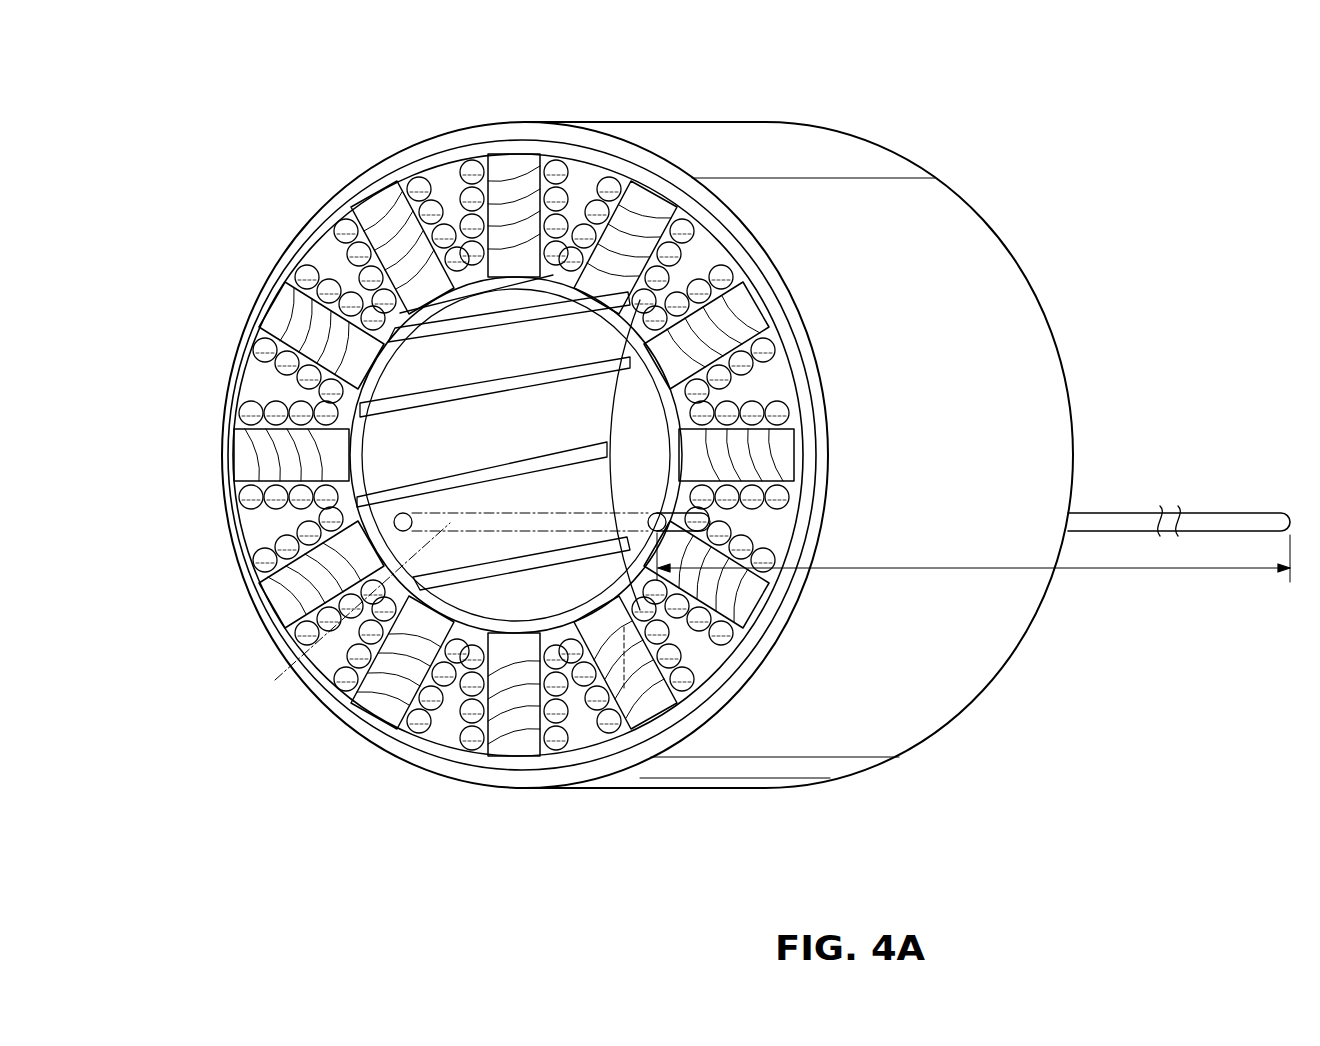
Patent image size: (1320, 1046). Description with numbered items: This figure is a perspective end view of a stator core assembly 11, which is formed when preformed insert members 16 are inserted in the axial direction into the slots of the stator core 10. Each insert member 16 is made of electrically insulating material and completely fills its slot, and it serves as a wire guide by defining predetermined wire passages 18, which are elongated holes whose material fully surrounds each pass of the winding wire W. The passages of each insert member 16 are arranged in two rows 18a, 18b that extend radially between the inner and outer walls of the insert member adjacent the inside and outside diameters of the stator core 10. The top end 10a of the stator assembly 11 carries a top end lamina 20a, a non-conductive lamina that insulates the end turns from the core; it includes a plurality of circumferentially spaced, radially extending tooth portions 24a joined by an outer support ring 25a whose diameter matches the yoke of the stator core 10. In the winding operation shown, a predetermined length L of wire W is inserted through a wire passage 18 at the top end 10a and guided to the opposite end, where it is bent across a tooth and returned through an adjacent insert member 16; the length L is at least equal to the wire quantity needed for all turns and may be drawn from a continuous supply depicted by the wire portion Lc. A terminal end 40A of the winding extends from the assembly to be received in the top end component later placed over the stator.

The stator core 10 is at (672, 793).
The top end 10a is at (226, 504).
The stator core assembly 11 is at (256, 291).
The insert member 16 is at (268, 385).
The wire passage 18 is at (600, 722).
The row of passages 18a is at (410, 178).
The row of passages 18b is at (478, 172).
The top end lamina 20a is at (229, 437).
The tooth portion 24a is at (268, 598).
The outer support ring 25a is at (432, 745).
The terminal end 40A is at (678, 512).
The wire W is at (1132, 512).
The predetermined length L is at (1132, 572).
The wire portion Lc is at (436, 615).